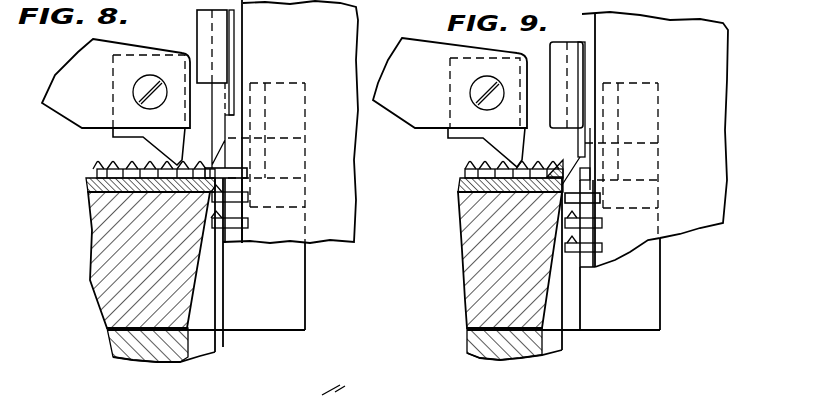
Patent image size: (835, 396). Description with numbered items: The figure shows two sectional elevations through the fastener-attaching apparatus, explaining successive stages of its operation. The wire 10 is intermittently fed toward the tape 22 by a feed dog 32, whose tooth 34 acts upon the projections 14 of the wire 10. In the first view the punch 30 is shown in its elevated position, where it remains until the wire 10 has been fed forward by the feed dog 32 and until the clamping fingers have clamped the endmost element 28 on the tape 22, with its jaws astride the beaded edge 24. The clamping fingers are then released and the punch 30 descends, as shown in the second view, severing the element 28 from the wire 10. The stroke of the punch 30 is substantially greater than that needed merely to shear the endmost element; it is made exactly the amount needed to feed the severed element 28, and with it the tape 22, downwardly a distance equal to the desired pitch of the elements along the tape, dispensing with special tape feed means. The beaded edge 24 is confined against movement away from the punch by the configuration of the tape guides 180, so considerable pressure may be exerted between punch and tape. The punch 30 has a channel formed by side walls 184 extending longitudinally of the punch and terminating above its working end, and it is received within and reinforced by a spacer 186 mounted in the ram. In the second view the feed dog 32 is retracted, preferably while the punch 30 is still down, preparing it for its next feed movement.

In FIG. 8, the wire 10 is at (103, 173).
In FIG. 9, the wire 10 is at (470, 172).
In FIG. 8, the projections 14 is at (148, 163).
In FIG. 8, the tape 22 is at (343, 215).
In FIG. 9, the tape 22 is at (713, 148).
In FIG. 8, the beaded edge 24 is at (243, 3).
In FIG. 9, the beaded edge 24 is at (595, 27).
In FIG. 8, the endmost element 28 is at (247, 172).
In FIG. 9, the endmost element 28 is at (593, 198).
In FIG. 8, the severing punch 30 is at (222, 140).
In FIG. 9, the severing punch 30 is at (570, 155).
In FIG. 8, the feed dog 32 is at (97, 55).
In FIG. 9, the feed dog 32 is at (438, 63).
In FIG. 8, the tooth 34 is at (172, 147).
In FIG. 9, the tooth 34 is at (518, 145).
In FIG. 8, the tape guides 180 is at (297, 295).
In FIG. 9, the tape guides 180 is at (643, 267).
In FIG. 8, the side walls 184 is at (235, 47).
In FIG. 9, the side walls 184 is at (588, 68).
In FIG. 8, the spacer 186 is at (203, 15).
In FIG. 9, the spacer 186 is at (558, 50).